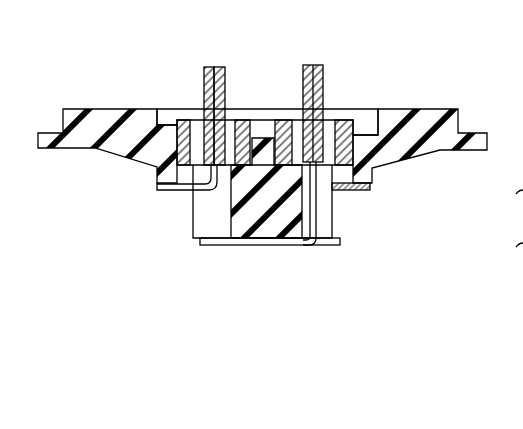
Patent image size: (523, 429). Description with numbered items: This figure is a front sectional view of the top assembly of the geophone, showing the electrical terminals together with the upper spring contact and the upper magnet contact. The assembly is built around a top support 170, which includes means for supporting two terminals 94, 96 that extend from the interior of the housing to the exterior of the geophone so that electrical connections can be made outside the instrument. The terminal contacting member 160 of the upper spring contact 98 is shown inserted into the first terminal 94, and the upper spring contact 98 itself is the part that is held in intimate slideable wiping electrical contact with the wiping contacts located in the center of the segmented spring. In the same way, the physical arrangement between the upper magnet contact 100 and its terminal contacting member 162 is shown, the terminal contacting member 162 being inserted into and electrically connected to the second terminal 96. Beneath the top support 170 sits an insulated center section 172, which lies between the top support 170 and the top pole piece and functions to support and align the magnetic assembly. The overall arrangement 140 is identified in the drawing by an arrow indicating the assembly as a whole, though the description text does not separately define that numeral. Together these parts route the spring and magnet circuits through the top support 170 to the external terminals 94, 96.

The terminal 94 is at (218, 65).
The terminal 96 is at (325, 83).
The upper spring contact 98 is at (178, 190).
The upper magnet contact 100 is at (280, 243).
The terminal assembly 140 is at (421, 97).
The terminal contacting member 160 is at (208, 87).
The terminal contacting member 162 is at (315, 218).
The top support 170 is at (412, 137).
The insulated center section 172 is at (253, 220).